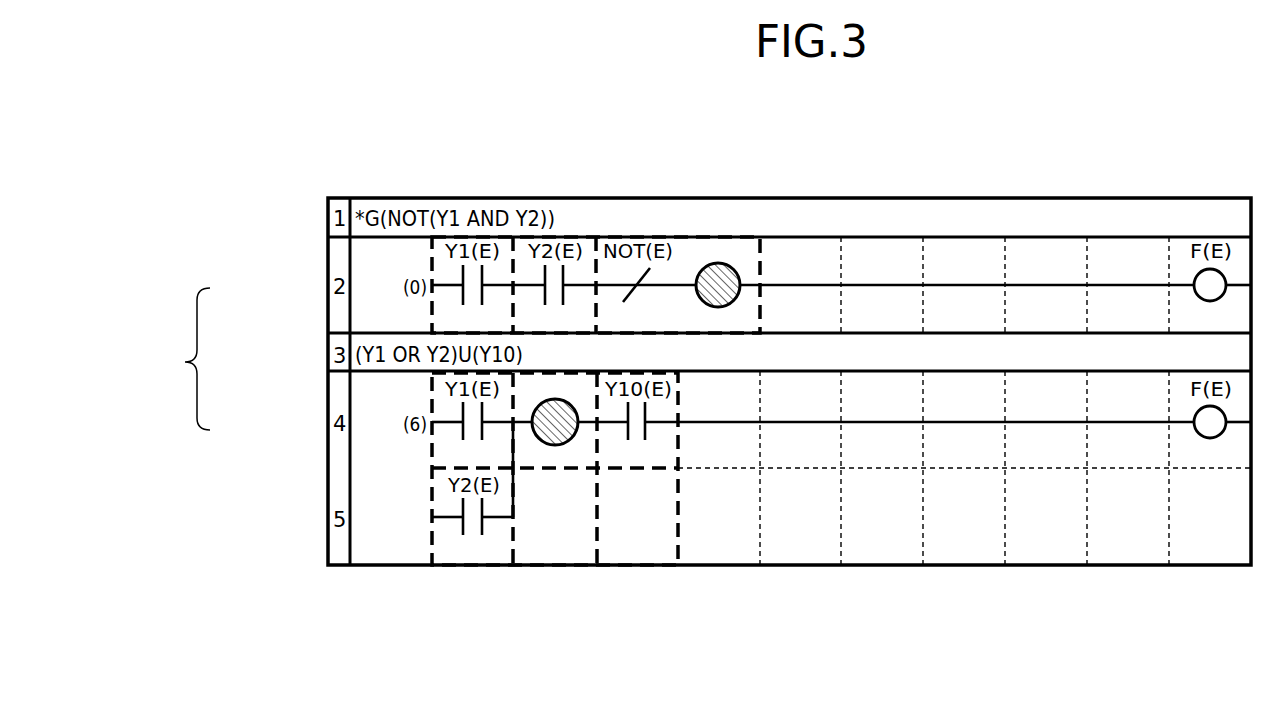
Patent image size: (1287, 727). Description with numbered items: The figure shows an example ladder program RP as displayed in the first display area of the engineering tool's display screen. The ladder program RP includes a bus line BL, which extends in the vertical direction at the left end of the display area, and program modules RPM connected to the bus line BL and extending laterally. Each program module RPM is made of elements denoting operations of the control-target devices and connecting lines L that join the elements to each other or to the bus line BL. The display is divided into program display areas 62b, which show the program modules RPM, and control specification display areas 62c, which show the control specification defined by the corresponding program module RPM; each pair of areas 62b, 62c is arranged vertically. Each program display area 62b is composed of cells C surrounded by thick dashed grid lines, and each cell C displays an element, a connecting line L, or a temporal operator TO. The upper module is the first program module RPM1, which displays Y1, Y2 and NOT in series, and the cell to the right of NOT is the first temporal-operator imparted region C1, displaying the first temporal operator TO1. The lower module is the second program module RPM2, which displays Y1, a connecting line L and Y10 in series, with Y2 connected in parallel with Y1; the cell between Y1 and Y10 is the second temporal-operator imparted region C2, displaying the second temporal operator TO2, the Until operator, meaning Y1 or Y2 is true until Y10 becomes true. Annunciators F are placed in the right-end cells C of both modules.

The cell C is at (583, 253).
The first temporal-operator imparted region C1 is at (688, 250).
The second temporal-operator imparted region C2 is at (580, 450).
The temporal operator TO is at (660, 325).
The first temporal operator TO1 is at (728, 258).
The second temporal operator TO2 is at (578, 441).
The control specification display area 62c is at (875, 353).
The program display area 62b is at (960, 402).
The ladder program RP is at (291, 359).
The program module RPM is at (323, 359).
The first program module RPM1 is at (430, 309).
The second program module RPM2 is at (430, 390).
The bus line BL is at (432, 528).
The connecting line L is at (515, 497).